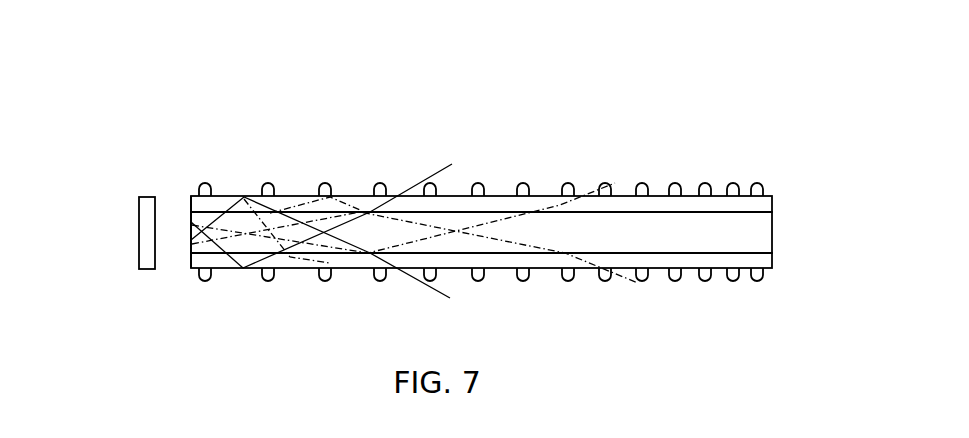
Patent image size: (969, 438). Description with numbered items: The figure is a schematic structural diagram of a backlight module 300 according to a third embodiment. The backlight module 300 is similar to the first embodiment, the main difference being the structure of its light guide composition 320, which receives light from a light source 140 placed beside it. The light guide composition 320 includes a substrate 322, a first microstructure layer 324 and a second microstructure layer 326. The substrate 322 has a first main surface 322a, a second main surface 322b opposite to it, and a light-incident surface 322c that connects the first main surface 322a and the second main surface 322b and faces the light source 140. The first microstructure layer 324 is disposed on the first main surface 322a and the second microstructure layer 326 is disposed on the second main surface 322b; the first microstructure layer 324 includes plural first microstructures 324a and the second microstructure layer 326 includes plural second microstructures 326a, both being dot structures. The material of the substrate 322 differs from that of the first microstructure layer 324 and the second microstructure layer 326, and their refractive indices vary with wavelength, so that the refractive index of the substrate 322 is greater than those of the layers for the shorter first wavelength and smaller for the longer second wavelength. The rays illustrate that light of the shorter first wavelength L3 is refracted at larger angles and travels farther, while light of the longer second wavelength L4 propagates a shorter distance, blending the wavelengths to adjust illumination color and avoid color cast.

The backlight module 300 is at (52, 50).
The light source 140 is at (139, 232).
The light guide composition 320 is at (603, 102).
The substrate 322 is at (692, 230).
The first main surface 322a is at (500, 254).
The second main surface 322b is at (296, 200).
The light-incident surface 322c is at (190, 232).
The first microstructure layer 324 is at (742, 258).
The first microstructures 324a is at (600, 283).
The second microstructure layer 326 is at (621, 203).
The second microstructures 326a is at (380, 194).
The first light wavelength L3 is at (508, 222).
The second light wavelength L4 is at (430, 172).